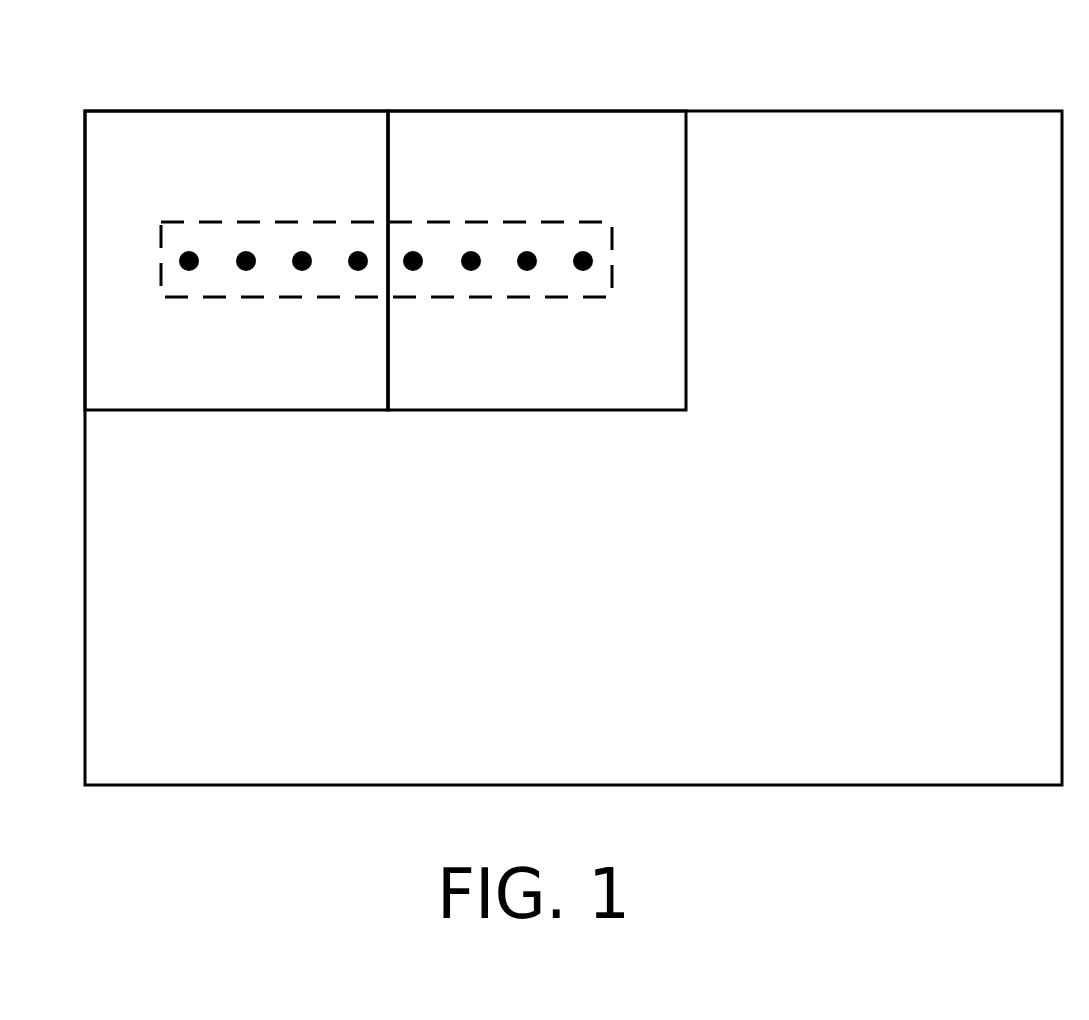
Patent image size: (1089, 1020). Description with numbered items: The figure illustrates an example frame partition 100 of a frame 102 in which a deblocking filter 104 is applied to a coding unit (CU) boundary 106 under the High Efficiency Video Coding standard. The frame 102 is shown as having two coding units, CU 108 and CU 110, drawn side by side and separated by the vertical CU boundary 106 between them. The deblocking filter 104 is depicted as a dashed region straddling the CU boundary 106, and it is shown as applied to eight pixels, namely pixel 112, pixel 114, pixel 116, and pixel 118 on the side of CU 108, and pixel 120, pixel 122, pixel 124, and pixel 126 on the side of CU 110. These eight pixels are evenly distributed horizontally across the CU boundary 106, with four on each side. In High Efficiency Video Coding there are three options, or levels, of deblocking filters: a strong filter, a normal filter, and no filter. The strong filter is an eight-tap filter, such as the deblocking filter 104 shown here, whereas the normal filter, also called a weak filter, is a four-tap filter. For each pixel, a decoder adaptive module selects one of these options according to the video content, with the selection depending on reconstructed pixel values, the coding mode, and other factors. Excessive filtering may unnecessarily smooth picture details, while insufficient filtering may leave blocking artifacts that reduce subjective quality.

The frame partition 100 is at (158, 47).
The frame 102 is at (596, 831).
The deblocking filter 104 is at (160, 238).
The coding unit (CU) boundary 106 is at (389, 335).
The CU 108 is at (277, 444).
The CU 110 is at (580, 444).
The pixel 112 is at (191, 252).
The pixel 114 is at (244, 271).
The pixel 116 is at (304, 252).
The pixel 118 is at (356, 271).
The pixel 120 is at (415, 271).
The pixel 122 is at (473, 252).
The pixel 124 is at (529, 271).
The pixel 126 is at (585, 252).